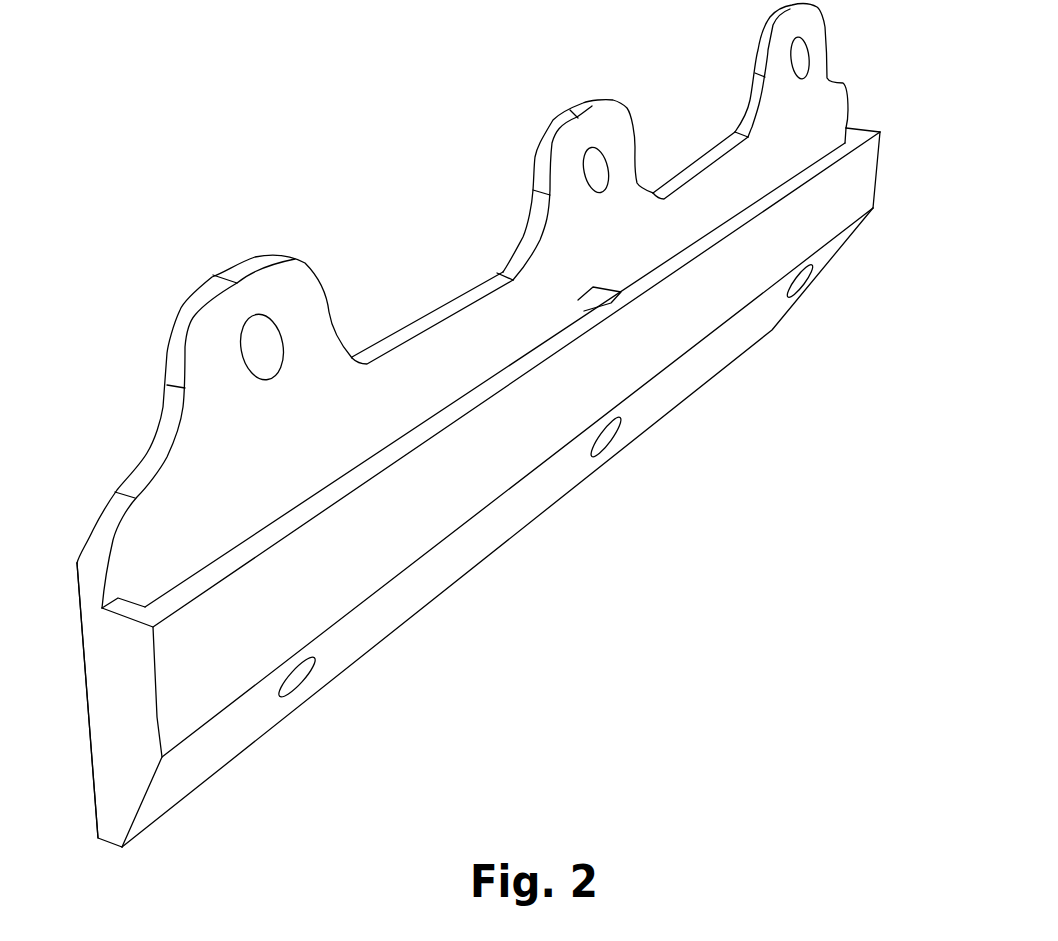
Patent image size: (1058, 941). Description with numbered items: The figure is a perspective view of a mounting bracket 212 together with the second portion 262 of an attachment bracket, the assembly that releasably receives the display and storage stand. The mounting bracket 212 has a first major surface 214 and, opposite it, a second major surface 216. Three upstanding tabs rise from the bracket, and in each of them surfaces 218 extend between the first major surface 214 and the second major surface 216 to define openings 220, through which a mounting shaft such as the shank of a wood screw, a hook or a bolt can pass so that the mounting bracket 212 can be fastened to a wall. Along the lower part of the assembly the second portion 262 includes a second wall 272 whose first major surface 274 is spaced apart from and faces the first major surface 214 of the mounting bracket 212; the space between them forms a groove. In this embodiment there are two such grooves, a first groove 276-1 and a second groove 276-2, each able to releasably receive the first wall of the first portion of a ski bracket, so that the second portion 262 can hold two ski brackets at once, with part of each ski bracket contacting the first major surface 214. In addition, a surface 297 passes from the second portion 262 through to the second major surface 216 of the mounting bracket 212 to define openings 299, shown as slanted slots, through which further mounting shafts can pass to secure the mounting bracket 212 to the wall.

The mounting bracket 212 is at (450, 162).
The first major surface 214 is at (217, 491).
The second major surface 216 is at (92, 503).
The surfaces 218 is at (594, 172).
The openings 220 is at (268, 360).
The second portion 262 is at (547, 410).
The second wall 272 is at (303, 517).
The first major surface 274 is at (272, 516).
The first groove 276-1 is at (502, 352).
The second groove 276-2 is at (822, 278).
The surface 297 is at (305, 673).
The openings 299 is at (292, 688).